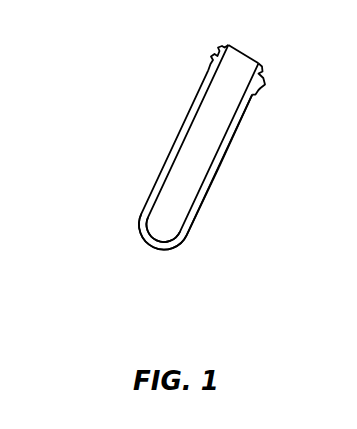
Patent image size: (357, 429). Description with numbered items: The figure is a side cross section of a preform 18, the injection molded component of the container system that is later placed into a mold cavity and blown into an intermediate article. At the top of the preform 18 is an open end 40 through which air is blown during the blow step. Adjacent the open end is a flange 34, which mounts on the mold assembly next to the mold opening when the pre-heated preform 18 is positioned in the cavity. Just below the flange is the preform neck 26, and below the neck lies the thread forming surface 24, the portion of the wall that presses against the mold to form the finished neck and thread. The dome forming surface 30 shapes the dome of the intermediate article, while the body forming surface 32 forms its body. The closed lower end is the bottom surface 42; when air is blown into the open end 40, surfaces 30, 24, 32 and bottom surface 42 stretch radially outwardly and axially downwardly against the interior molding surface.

The preform 18 is at (122, 123).
The open end 40 is at (244, 59).
The flange 34 is at (208, 70).
The preform neck 26 is at (252, 96).
The dome forming surface 30 is at (237, 135).
The thread forming surface 24 is at (219, 170).
The body forming surface 32 is at (189, 236).
The bottom surface 42 is at (143, 236).